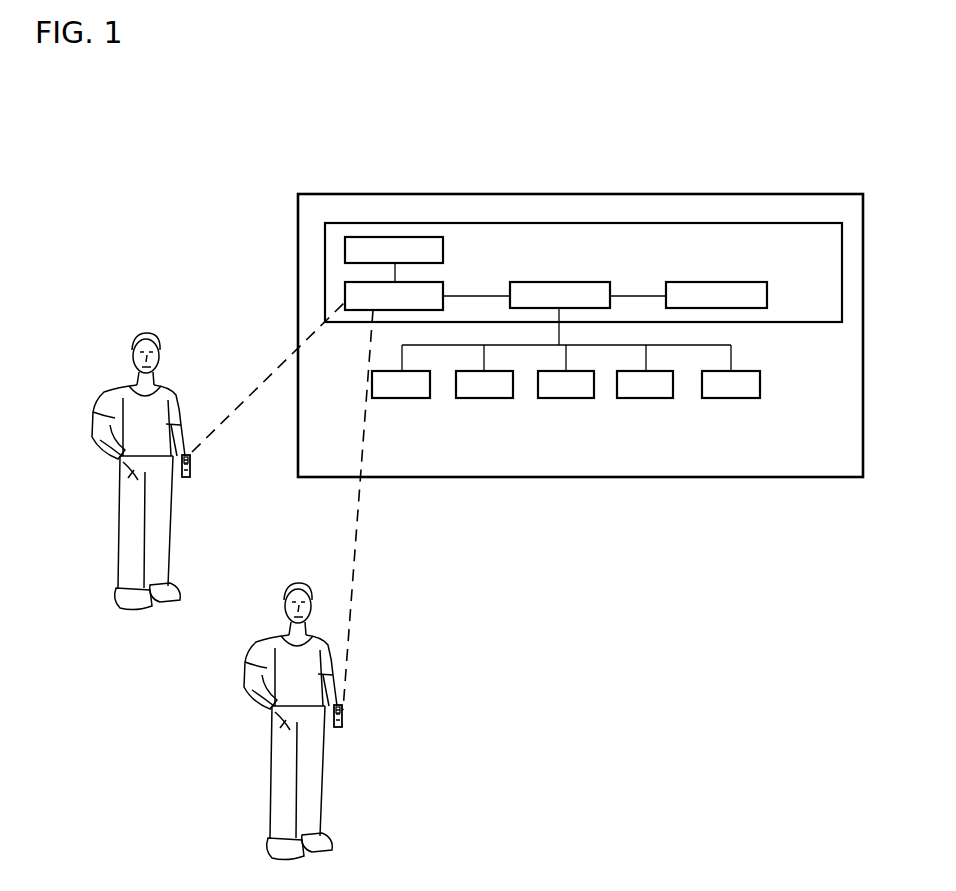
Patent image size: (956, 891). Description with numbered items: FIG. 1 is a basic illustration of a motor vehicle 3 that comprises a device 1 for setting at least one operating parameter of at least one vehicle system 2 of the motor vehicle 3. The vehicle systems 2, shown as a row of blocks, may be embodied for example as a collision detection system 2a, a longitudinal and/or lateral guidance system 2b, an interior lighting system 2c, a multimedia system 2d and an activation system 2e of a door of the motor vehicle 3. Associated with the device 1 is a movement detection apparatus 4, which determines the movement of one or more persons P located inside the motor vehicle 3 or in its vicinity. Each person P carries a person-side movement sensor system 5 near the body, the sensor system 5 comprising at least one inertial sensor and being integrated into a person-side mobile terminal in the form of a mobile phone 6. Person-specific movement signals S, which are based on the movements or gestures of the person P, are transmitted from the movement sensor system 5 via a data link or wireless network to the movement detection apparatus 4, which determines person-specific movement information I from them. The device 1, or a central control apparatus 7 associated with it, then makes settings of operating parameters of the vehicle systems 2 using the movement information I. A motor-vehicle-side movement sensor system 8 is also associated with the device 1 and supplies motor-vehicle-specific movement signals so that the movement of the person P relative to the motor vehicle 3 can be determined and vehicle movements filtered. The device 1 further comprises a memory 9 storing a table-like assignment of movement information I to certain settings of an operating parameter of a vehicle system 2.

The device 1 is at (506, 223).
The vehicle systems 2 is at (782, 383).
The collision detection system 2a is at (402, 398).
The longitudinal and/or lateral guidance system 2b is at (484, 398).
The interior lighting system 2c is at (566, 398).
The multimedia system 2d is at (646, 398).
The activation system of a door 2e is at (731, 398).
The motor vehicle 3 is at (650, 194).
The movement detection apparatus 4 is at (443, 282).
The person-side movement sensor system 5 is at (188, 477).
The mobile phone 6 is at (190, 452).
The central control apparatus 7 is at (548, 282).
The motor-vehicle-side movement sensor system 8 is at (412, 237).
The memory 9 is at (703, 282).
The person-specific movement information I is at (478, 278).
The person P is at (126, 312).
The person-specific movement signals S is at (283, 506).